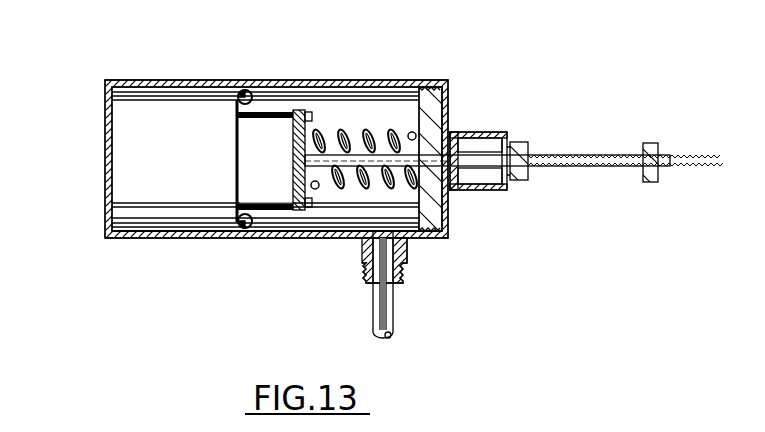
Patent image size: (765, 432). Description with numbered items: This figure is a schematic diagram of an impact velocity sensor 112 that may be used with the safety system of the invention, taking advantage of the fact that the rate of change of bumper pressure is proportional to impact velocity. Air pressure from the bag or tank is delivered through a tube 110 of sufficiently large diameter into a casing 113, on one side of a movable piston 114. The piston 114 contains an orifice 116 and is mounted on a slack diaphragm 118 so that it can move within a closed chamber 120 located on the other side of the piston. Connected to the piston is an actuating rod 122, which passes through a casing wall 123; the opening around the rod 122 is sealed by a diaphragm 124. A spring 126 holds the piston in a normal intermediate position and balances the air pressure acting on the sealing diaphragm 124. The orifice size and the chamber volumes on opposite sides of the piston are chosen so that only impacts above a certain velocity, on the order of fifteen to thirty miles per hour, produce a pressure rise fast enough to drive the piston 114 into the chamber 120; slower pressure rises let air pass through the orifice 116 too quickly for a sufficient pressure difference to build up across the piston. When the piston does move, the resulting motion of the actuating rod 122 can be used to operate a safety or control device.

The tube 110 is at (392, 337).
The impact velocity sensor 112 is at (186, 70).
The casing 113 is at (170, 238).
The movable piston 114 is at (310, 129).
The orifice 116 is at (292, 185).
The slack diaphragm 118 is at (232, 124).
The closed chamber 120 is at (128, 120).
The actuating rod 122 is at (460, 193).
The casing wall 123 is at (432, 123).
The sealing diaphragm 124 is at (490, 192).
The spring 126 is at (365, 132).